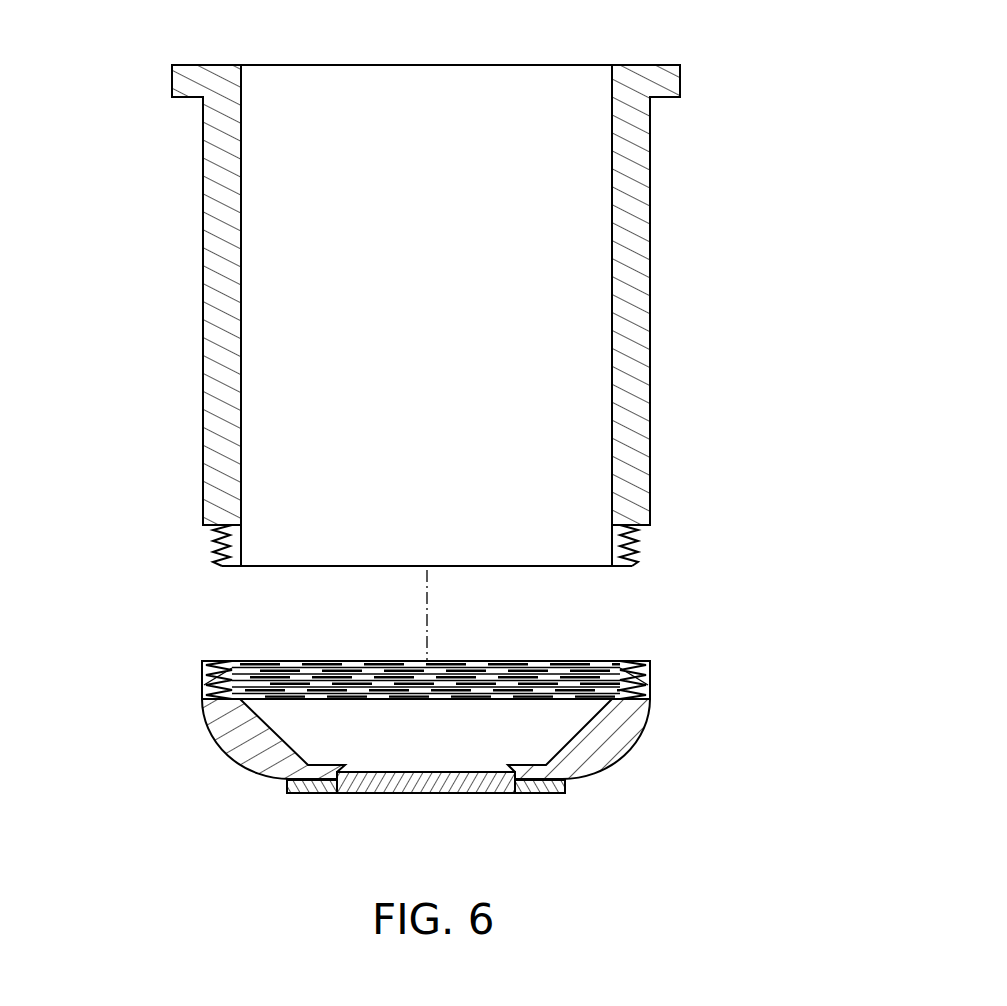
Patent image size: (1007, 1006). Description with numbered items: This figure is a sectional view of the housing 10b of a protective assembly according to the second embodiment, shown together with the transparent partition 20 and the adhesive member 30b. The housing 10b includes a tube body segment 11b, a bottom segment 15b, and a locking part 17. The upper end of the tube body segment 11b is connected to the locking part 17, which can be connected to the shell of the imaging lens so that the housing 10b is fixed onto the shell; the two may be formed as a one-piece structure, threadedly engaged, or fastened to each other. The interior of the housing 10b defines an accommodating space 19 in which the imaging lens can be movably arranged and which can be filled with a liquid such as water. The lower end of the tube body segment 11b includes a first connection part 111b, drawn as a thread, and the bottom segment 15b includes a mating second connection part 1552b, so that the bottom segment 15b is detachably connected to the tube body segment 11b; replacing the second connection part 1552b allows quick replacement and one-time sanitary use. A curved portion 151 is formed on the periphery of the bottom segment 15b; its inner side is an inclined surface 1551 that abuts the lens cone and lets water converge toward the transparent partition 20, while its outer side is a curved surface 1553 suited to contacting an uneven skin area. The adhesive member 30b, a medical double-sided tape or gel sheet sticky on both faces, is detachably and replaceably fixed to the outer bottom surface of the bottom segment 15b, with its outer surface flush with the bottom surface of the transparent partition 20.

The housing 10b is at (450, 283).
The tube body segment 11b is at (436, 315).
The first connection part 111b is at (636, 543).
The locking part 17 is at (176, 86).
The accommodating space 19 is at (572, 87).
The bottom segment 15b is at (435, 737).
The curved portion 151 is at (435, 716).
The inclined surface 1551 is at (568, 735).
The second connection part 1552b is at (258, 677).
The curved surface 1553 is at (222, 766).
The transparent partition 20 is at (424, 795).
The adhesive member 30b is at (315, 790).